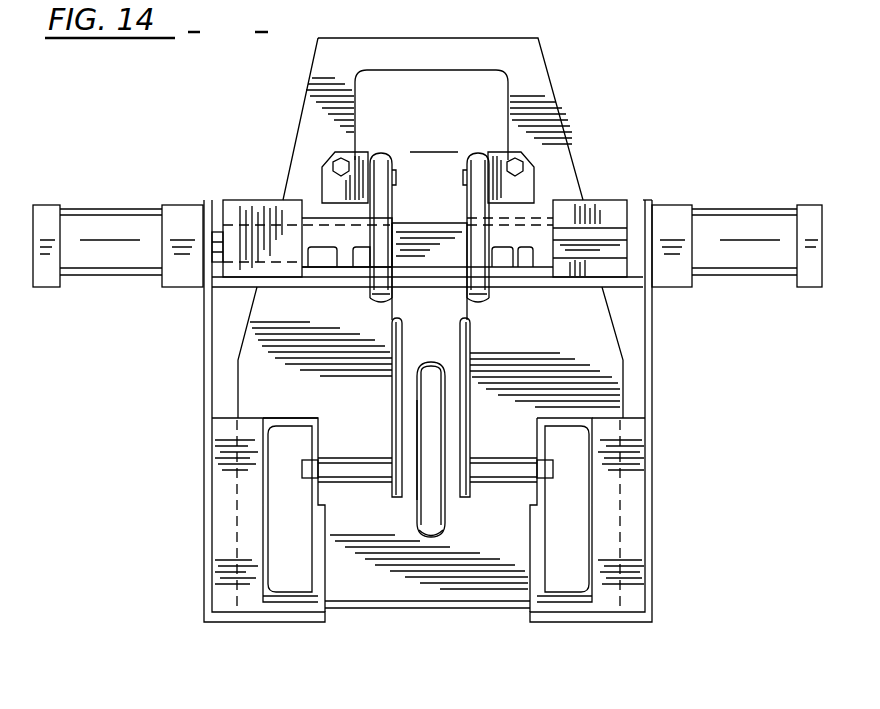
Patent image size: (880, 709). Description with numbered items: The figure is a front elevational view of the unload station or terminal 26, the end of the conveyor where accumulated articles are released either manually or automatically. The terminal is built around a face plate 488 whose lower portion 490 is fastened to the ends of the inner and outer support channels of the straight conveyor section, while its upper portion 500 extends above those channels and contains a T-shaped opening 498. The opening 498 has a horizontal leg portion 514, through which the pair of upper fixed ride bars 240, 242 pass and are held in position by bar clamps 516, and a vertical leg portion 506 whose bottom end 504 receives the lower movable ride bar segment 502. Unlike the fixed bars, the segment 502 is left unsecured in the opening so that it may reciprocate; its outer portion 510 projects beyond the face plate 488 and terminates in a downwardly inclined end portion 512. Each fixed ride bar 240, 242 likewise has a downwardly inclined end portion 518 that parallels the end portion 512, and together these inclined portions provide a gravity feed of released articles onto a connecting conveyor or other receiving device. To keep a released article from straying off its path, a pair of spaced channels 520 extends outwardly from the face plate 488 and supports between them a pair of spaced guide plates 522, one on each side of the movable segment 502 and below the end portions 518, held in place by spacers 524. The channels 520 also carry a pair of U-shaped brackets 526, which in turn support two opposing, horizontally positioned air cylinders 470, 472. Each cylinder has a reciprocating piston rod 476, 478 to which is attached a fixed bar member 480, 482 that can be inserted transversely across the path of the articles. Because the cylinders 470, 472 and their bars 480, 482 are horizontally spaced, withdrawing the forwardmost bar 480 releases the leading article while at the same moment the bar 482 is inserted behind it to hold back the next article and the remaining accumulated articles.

The unload station 26 is at (528, 38).
The upper fixed ride bar 240 is at (475, 149).
The upper fixed ride bar 242 is at (380, 150).
The air cylinder 470 is at (175, 212).
The air cylinder 472 is at (675, 212).
The piston rod 476 is at (217, 235).
The piston rod 478 is at (645, 205).
The bar member 480 is at (315, 218).
The bar member 482 is at (558, 200).
The face plate 488 is at (365, 50).
The lower portion 490 is at (388, 595).
The opening 498 is at (434, 138).
The upper portion 500 is at (537, 85).
The lower movable ride bar segment 502 is at (447, 362).
The bottom end 504 is at (400, 385).
The vertical leg portion 506 is at (447, 318).
The outer portion 510 is at (440, 432).
The downwardly inclined end portion 512 is at (440, 538).
The horizontal leg portion 514 is at (432, 90).
The bar clamp 516 is at (352, 150).
The end portion 518 is at (370, 295).
The channel 520 is at (287, 420).
The guide plate 522 is at (395, 440).
The spacer 524 is at (362, 466).
The U-shaped bracket 526 is at (205, 380).